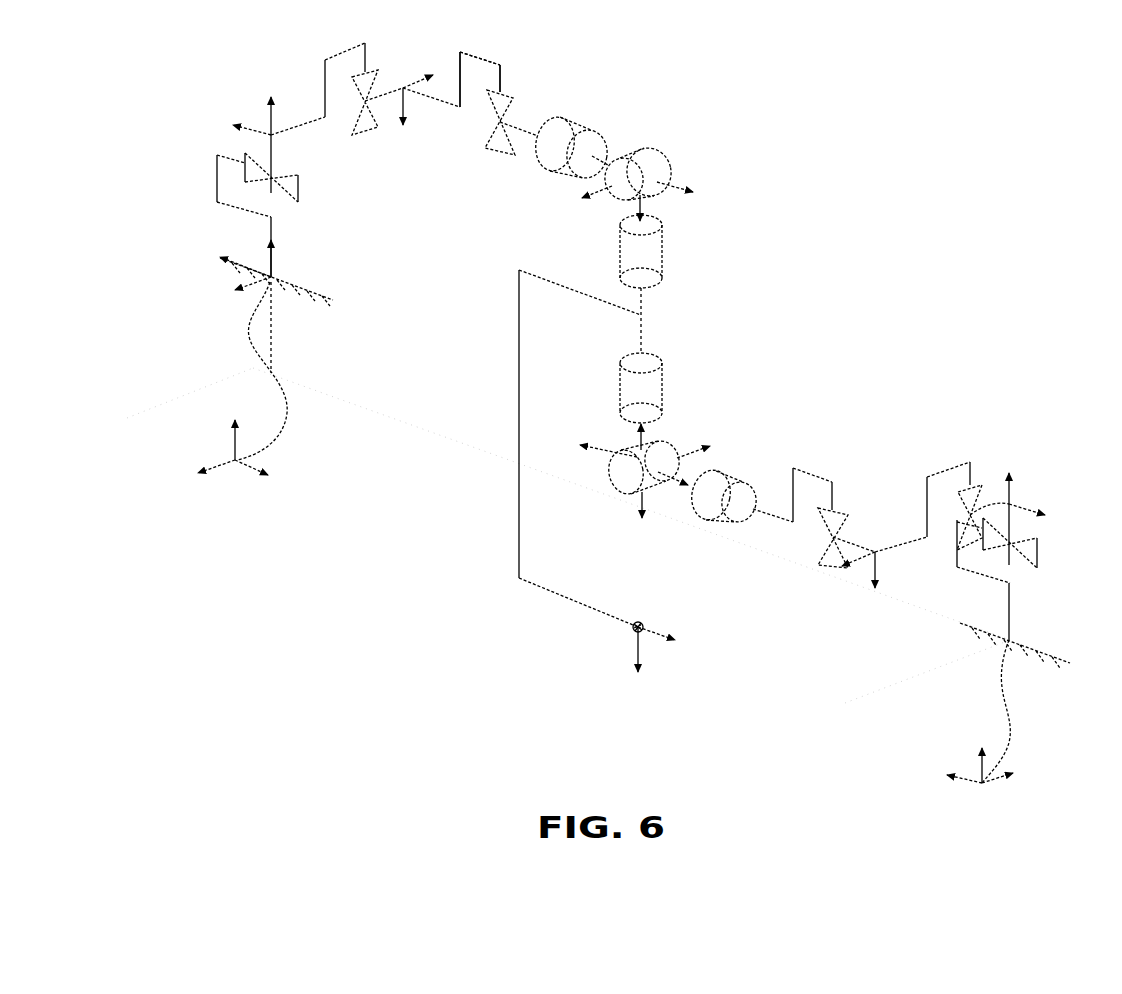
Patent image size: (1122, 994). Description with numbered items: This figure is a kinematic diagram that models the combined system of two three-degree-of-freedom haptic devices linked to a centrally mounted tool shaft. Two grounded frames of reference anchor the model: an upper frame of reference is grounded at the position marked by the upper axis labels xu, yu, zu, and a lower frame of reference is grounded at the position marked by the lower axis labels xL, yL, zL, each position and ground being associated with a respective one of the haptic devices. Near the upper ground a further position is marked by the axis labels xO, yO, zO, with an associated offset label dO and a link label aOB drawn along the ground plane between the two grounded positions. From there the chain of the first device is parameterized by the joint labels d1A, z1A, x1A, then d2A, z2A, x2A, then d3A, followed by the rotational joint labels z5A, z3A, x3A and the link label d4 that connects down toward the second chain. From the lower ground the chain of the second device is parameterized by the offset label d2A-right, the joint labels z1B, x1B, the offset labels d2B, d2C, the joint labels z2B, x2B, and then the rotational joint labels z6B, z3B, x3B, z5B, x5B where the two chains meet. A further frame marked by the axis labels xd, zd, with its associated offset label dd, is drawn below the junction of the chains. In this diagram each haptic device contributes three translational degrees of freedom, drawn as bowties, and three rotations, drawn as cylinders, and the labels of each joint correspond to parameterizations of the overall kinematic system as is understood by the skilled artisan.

The x axis of base frame O xO is at (236, 246).
The y axis of base frame O yO is at (236, 293).
The z axis of base frame O zO is at (293, 260).
The offset dO is at (297, 327).
The upper frame of reference x axis xu is at (201, 474).
The upper frame of reference y axis yu is at (273, 474).
The upper frame of reference z axis zu is at (242, 423).
The link length aOB is at (631, 504).
The joint offset d1A is at (284, 215).
The z axis of joint 1A z1A is at (275, 126).
The x axis of joint 1A x1A is at (237, 107).
The joint offset d2A is at (324, 73).
The z axis of joint 2A z2A is at (428, 61).
The x axis of joint 2A x2A is at (421, 128).
The joint offset d3A is at (501, 93).
The z axis of joint 5A z5A is at (577, 206).
The z3A, z4A, x5A, x6A axes z3A is at (781, 189).
The x3A, x4A, z6A axes x3A is at (645, 205).
The link length d4 is at (651, 319).
The z axis of joint 6B z6B is at (642, 436).
The x3B, x4B axes x3B is at (629, 526).
The z3B, z4B axes z3B is at (582, 432).
The z axis of joint 5B z5B is at (720, 437).
The x5B, x6B axes x5B is at (677, 488).
The offset dd is at (562, 448).
The x axis of frame d xd is at (678, 643).
The z axis of frame d zd is at (644, 667).
The joint offset d2C is at (834, 501).
The z axis of joint 2B z2B is at (837, 581).
The x axis of joint 2B x2B is at (885, 594).
The joint offset d2B is at (942, 488).
The z axis of joint 1B z1B is at (1017, 498).
The x axis of joint 1B x1B is at (1054, 521).
The joint offset d2A (arm B) d2A-right is at (1015, 579).
The lower frame of reference z axis zL is at (984, 747).
The lower frame of reference y axis yL is at (947, 757).
The lower frame of reference x axis xL is at (1018, 766).